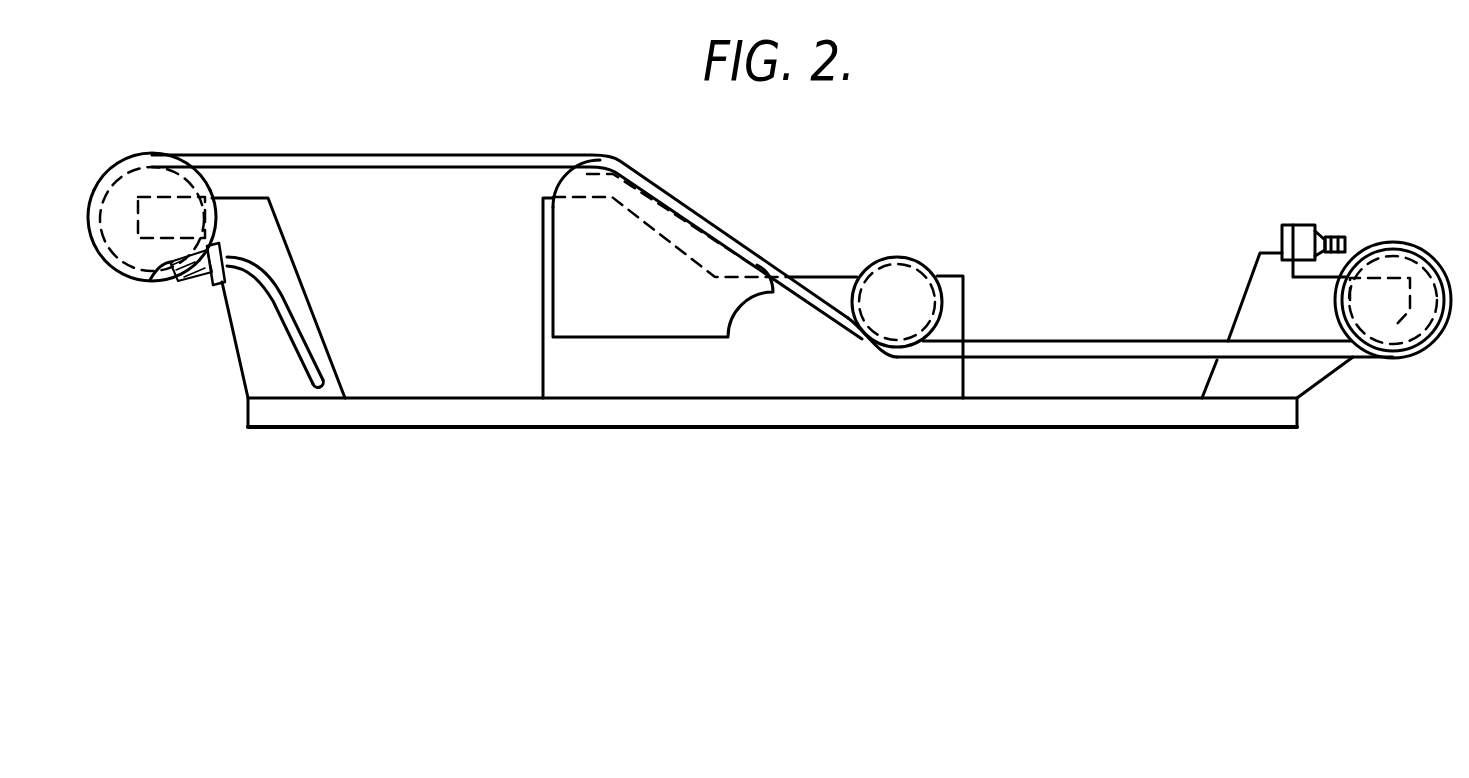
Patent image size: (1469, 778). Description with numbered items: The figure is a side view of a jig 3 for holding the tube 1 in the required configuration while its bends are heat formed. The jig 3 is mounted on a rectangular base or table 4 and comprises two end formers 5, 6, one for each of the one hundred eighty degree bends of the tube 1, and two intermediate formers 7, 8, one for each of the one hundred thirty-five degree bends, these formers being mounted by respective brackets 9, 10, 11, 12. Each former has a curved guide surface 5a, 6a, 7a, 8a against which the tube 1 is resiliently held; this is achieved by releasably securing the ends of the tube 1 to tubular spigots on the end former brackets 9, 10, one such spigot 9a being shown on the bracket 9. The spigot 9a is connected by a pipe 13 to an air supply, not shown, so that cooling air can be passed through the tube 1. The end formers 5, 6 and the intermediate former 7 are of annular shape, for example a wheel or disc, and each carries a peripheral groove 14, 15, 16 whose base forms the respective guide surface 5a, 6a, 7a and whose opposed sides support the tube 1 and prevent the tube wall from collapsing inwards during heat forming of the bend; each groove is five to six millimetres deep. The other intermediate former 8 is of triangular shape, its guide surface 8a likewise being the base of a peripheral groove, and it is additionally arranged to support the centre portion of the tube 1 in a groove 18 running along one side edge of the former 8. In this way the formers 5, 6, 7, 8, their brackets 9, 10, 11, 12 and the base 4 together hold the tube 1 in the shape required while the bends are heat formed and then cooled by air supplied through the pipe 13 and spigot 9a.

The tube 1 is at (407, 159).
The jig 3 is at (772, 448).
The base 4 is at (493, 420).
The end former 5 is at (137, 255).
The curved guide surface 5a is at (121, 182).
The end former 6 is at (1385, 266).
The curved guide surface 6a is at (1428, 323).
The intermediate former 7 is at (888, 304).
The curved guide surface 7a is at (866, 343).
The intermediate former 8 is at (594, 246).
The curved guide surface 8a is at (686, 140).
The bracket 9 is at (271, 237).
The tubular spigot 9a is at (194, 284).
The bracket 10 is at (1260, 288).
The bracket 11 is at (540, 316).
The bracket 12 is at (958, 299).
The pipe 13 is at (295, 318).
The peripheral groove 14 is at (158, 160).
The peripheral groove 15 is at (1345, 313).
The peripheral groove 16 is at (915, 265).
The groove 18 is at (693, 203).